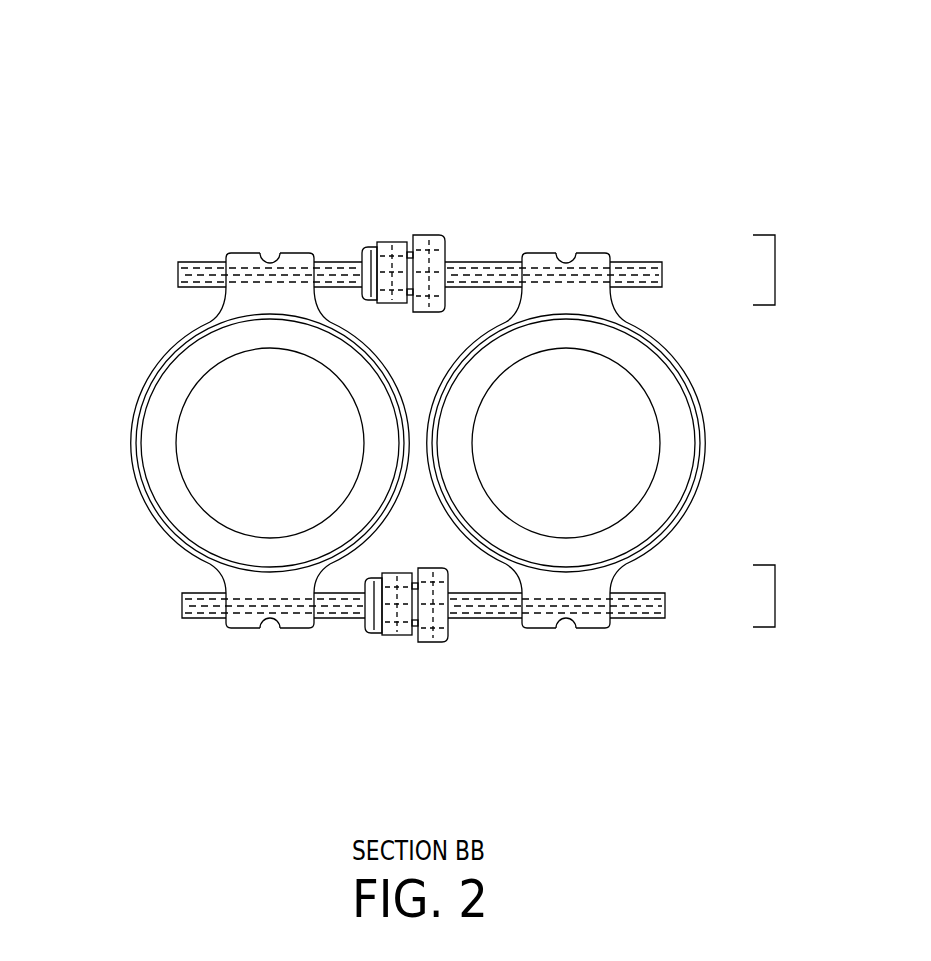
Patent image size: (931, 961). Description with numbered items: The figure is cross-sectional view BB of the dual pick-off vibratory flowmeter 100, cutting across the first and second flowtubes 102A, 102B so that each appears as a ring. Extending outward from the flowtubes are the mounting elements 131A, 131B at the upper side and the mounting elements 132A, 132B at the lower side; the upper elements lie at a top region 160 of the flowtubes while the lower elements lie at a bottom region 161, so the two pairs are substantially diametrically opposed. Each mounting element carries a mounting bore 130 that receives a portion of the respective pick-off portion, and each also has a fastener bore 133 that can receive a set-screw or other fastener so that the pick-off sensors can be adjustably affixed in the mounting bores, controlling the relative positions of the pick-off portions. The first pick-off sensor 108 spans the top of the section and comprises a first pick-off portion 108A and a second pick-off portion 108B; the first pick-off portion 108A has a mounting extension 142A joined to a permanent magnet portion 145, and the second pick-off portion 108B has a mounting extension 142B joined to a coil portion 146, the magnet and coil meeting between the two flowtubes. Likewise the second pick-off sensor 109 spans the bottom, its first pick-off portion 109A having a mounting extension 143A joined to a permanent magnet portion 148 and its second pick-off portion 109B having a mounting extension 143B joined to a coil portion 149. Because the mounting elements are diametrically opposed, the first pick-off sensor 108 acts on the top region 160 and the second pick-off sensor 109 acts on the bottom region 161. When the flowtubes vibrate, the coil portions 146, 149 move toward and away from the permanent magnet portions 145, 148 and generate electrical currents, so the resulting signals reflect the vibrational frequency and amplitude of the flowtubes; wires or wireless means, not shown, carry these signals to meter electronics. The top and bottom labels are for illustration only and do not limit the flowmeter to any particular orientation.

The dual pick-off vibratory flowmeter 100 is at (211, 800).
The first flowtube 102A is at (706, 414).
The second flowtube 102B is at (131, 412).
The first pick-off sensor 108 is at (180, 97).
The first pick-off portion 108A is at (476, 203).
The second pick-off portion 108B is at (323, 172).
The second pick-off sensor 109 is at (182, 728).
The first pick-off portion 109A is at (489, 643).
The second pick-off portion 109B is at (323, 676).
The mounting bore 130 is at (224, 261).
The mounting element 131A is at (580, 253).
The mounting element 131B is at (235, 253).
The mounting element 132A is at (598, 628).
The mounting element 132B is at (235, 629).
The fastener bore 133 is at (266, 258).
The mounting extension 142A is at (650, 288).
The mounting extension 142B is at (190, 287).
The mounting extension 143A is at (647, 593).
The mounting extension 143B is at (192, 593).
The permanent magnet portion 145 is at (415, 220).
The coil portion 146 is at (362, 220).
The permanent magnet portion 148 is at (417, 658).
The coil portion 149 is at (365, 658).
The top region 160 is at (775, 270).
The bottom region 161 is at (775, 596).